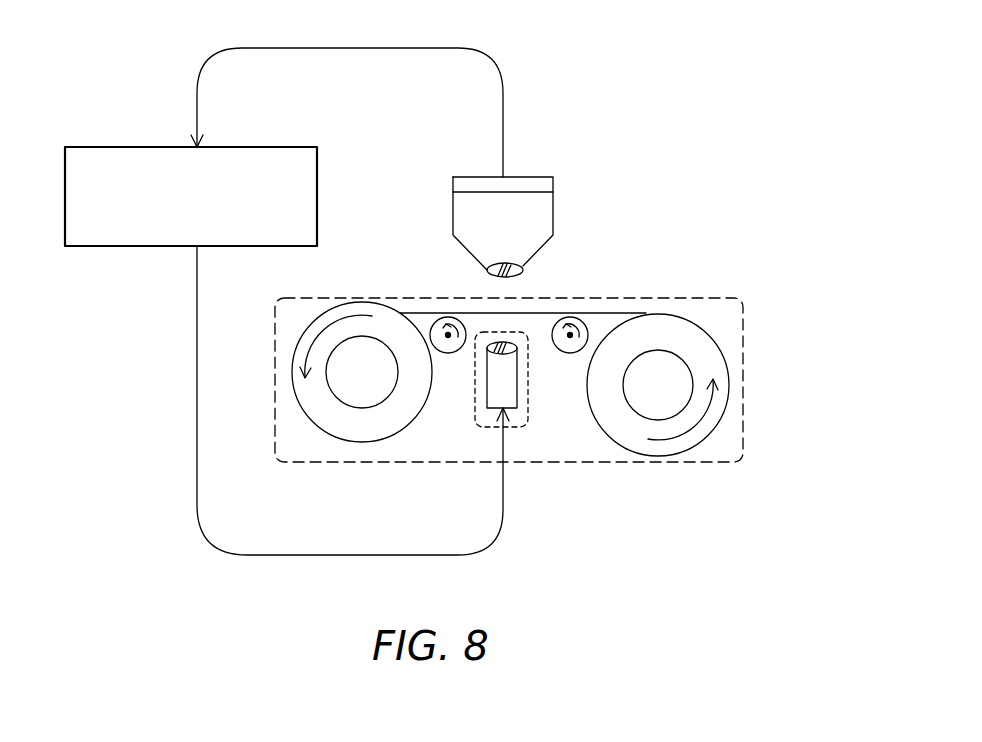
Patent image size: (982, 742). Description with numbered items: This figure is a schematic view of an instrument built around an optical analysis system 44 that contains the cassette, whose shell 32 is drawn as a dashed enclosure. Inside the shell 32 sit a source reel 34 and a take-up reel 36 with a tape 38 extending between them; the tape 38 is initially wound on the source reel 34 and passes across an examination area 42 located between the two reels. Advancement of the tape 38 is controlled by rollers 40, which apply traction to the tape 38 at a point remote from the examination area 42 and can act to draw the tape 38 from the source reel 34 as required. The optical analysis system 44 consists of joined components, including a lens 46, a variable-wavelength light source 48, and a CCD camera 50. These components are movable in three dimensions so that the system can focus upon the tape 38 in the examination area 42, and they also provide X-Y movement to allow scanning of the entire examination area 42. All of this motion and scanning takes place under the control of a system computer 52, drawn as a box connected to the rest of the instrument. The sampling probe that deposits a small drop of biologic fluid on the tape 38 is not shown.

The shell 32 is at (746, 339).
The source reel 34 is at (678, 452).
The take-up reel 36 is at (348, 441).
The tape 38 is at (622, 297).
The rollers 40 is at (452, 354).
The examination area 42 is at (508, 296).
The optical analysis system 44 is at (550, 135).
The lens 46 is at (487, 270).
The variable-wavelength light source 48 is at (505, 410).
The CCD camera 50 is at (558, 197).
The system computer 52 is at (277, 145).